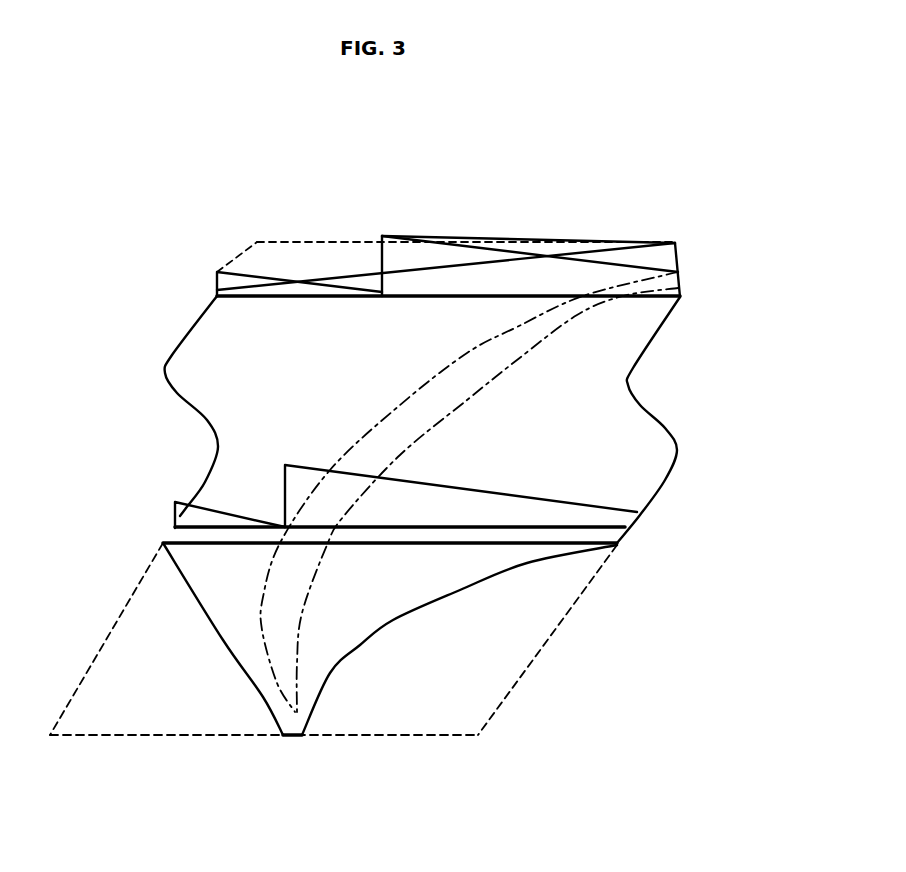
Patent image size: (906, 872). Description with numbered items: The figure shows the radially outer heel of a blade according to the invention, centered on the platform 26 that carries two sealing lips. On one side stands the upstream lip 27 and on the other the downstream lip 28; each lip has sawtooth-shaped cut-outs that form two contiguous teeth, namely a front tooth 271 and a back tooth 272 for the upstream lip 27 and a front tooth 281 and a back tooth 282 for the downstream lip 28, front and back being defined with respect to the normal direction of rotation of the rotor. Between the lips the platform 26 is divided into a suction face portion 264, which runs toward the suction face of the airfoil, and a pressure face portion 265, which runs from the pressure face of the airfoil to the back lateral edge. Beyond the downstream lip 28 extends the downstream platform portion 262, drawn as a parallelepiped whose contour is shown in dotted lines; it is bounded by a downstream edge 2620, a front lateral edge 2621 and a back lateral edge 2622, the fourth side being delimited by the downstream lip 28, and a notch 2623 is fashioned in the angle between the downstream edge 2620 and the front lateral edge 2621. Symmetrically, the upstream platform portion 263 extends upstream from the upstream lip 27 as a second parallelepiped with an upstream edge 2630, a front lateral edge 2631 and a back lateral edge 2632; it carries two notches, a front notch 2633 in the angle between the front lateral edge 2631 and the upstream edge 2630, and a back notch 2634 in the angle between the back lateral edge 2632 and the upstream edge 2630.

The platform 26 is at (268, 396).
The upstream lip 27 is at (160, 515).
The downstream lip 28 is at (203, 284).
The downstream platform portion 262 is at (612, 255).
The upstream platform portion 263 is at (362, 618).
The suction face portion 264 is at (273, 382).
The pressure face portion 265 is at (573, 403).
The front tooth 271 is at (200, 520).
The back tooth 272 is at (425, 516).
The front tooth 281 is at (280, 288).
The back tooth 282 is at (527, 284).
The downstream edge 2620 is at (618, 236).
The front lateral edge 2621 is at (240, 264).
The back lateral edge 2622 is at (686, 251).
The notch 2623 is at (306, 258).
The upstream edge 2630 is at (290, 743).
The front lateral edge 2631 is at (160, 545).
The back lateral edge 2632 is at (620, 546).
The front notch 2633 is at (218, 644).
The back notch 2634 is at (413, 632).